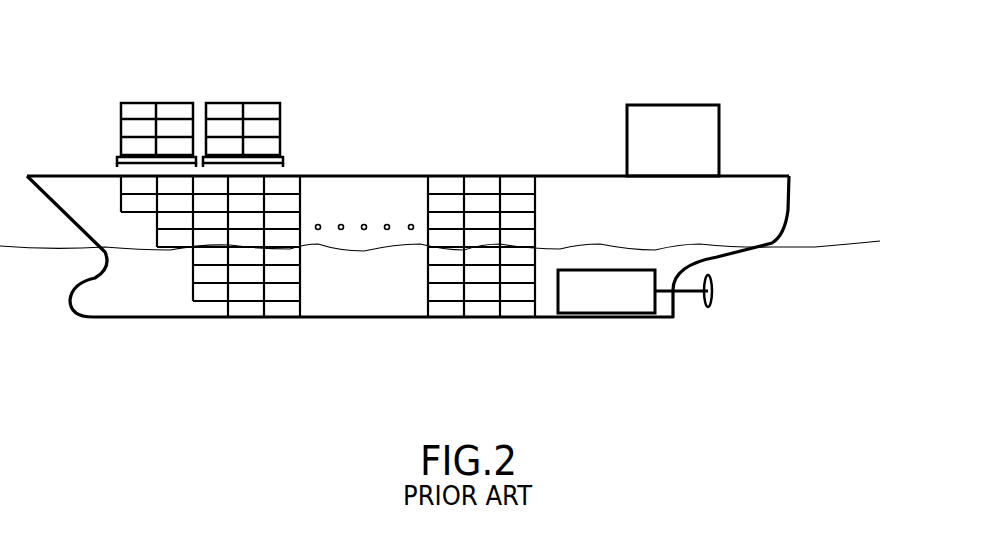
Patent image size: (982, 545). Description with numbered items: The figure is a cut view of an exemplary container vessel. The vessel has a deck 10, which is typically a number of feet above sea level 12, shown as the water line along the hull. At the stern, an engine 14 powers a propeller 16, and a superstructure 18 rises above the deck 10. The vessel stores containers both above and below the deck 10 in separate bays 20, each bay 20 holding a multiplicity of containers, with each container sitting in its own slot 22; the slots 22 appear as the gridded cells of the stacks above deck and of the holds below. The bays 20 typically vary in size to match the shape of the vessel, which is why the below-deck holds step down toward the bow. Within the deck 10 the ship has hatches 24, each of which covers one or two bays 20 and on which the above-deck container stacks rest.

The deck 10 is at (398, 177).
The sea level 12 is at (815, 248).
The engine 14 is at (612, 306).
The propeller 16 is at (715, 298).
The superstructure 18 is at (682, 104).
The bays 20 is at (210, 305).
The slot 22 is at (263, 109).
The hatches 24 is at (283, 161).